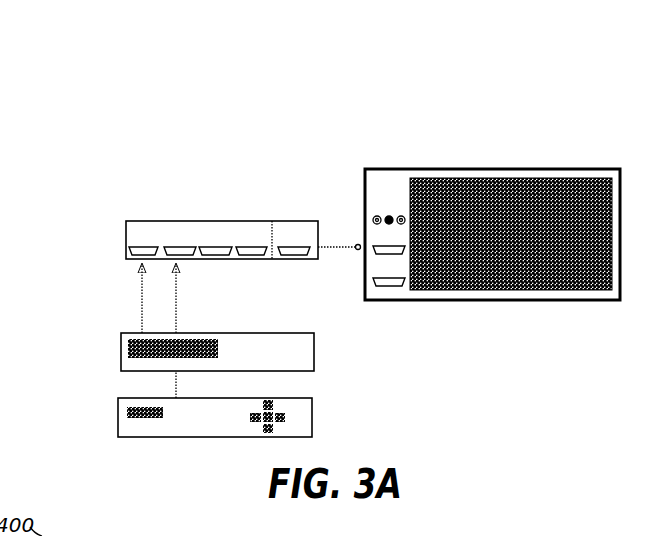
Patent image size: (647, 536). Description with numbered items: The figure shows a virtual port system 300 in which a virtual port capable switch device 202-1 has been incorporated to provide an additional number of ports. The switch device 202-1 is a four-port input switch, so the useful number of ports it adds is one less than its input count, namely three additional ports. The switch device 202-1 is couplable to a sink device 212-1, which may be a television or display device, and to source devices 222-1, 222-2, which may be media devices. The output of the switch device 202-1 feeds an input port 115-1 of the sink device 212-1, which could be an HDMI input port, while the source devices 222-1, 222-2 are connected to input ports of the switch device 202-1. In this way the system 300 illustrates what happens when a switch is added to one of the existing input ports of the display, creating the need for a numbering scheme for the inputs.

The virtual port system 300 is at (82, 130).
The switch device 202-1 is at (115, 244).
The input port 115-1 is at (359, 234).
The sink device 212-1 is at (498, 151).
The source device 222-1 is at (119, 357).
The source device 222-2 is at (118, 413).